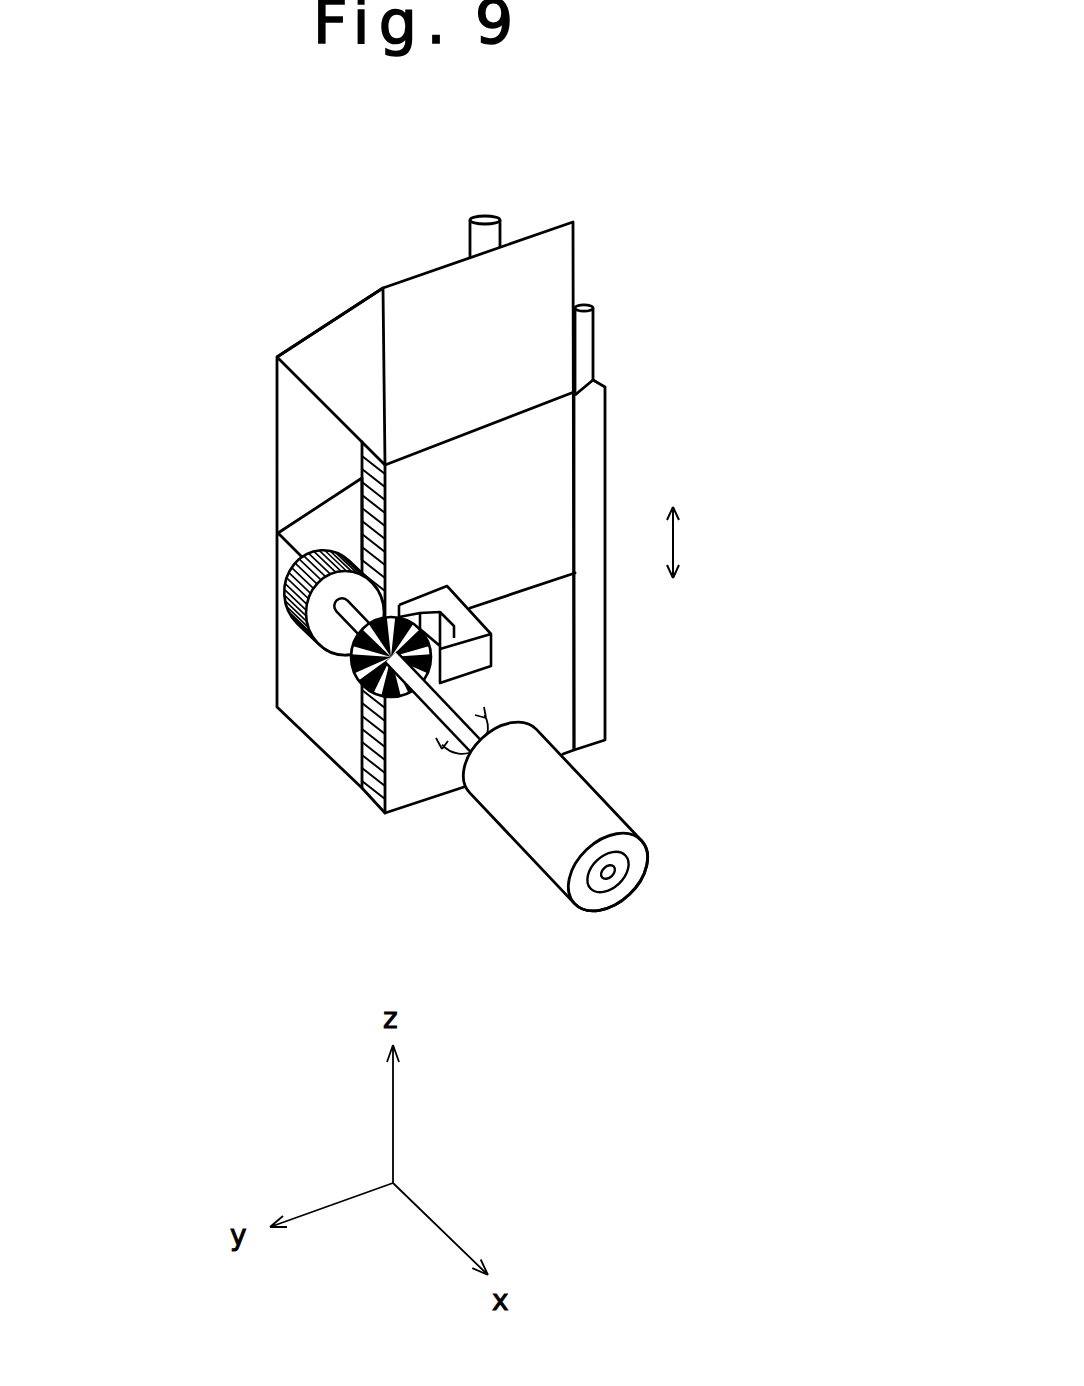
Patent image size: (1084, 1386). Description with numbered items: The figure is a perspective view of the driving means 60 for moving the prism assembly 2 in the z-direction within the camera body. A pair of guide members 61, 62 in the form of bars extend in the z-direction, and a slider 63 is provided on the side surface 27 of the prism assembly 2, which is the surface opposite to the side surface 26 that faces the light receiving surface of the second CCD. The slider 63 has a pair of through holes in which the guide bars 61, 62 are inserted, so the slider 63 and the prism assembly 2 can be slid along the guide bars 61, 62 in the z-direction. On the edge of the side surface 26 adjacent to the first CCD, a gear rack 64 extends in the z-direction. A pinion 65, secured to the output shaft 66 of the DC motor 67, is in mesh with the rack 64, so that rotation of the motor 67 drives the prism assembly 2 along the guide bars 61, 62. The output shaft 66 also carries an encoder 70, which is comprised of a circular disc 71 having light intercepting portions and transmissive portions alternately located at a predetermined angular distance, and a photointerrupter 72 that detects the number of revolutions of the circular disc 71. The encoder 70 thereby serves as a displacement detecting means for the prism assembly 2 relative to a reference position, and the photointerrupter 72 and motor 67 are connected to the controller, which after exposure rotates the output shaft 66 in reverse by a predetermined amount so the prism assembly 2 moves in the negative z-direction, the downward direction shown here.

The prism assembly 2 is at (301, 288).
The side surface 26 is at (288, 558).
The side surface 27 is at (575, 610).
The driving means 60 is at (699, 392).
The guide member 61 is at (473, 238).
The guide member 62 is at (585, 338).
The slider 63 is at (588, 440).
The gear rack 64 is at (362, 510).
The pinion 65 is at (290, 604).
The output shaft 66 is at (350, 622).
The DC motor 67 is at (592, 813).
The encoder 70 is at (518, 684).
The circular disc 71 is at (357, 677).
The photointerrupter 72 is at (478, 648).